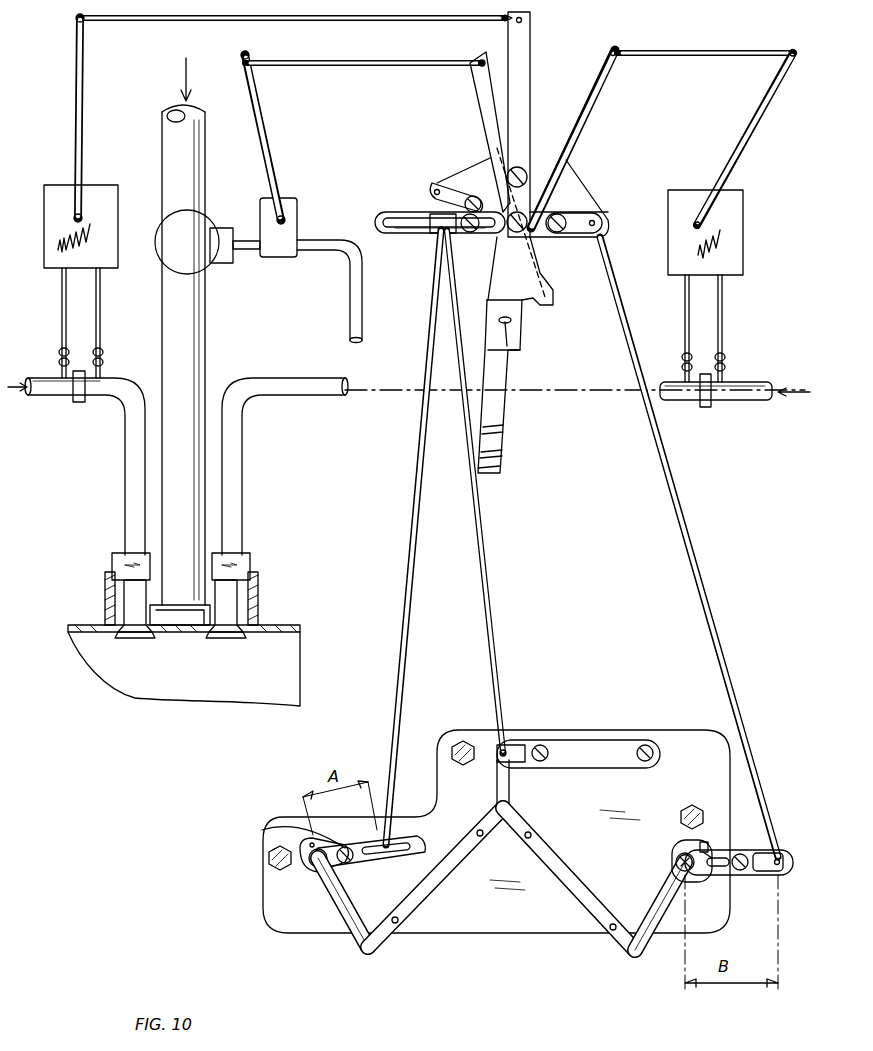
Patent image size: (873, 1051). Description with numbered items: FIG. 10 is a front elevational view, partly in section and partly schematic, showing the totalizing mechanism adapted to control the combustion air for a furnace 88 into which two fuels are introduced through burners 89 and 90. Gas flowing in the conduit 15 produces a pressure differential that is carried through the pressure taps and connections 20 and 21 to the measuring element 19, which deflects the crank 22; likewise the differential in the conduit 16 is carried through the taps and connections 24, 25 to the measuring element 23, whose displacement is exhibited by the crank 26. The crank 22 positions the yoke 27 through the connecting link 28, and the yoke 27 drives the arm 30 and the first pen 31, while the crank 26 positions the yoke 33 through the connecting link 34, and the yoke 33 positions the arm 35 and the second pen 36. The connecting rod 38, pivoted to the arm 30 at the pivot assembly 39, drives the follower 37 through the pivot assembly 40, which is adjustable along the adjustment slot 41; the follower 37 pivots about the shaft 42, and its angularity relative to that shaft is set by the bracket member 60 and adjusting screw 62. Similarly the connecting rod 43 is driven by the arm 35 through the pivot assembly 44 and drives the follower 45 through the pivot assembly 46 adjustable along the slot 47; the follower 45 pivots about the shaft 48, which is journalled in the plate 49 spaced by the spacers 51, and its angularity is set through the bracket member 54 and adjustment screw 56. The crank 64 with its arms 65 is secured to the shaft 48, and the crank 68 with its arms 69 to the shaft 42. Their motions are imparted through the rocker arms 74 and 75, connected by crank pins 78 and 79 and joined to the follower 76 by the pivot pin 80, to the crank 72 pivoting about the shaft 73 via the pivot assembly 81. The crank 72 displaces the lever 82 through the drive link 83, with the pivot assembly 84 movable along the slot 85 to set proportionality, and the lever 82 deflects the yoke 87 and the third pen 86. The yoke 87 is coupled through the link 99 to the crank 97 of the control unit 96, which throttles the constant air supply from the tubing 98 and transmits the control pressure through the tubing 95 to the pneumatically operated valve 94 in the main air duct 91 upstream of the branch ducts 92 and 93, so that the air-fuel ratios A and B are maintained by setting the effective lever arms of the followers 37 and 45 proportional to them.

The conduit 15 is at (126, 443).
The conduit 16 is at (285, 400).
The measuring element 19 is at (97, 190).
The pressure tap and connection 20 is at (60, 308).
The pressure tap and connection 21 is at (102, 308).
The crank 22 is at (82, 86).
The measuring element 23 is at (745, 231).
The pressure tap and connection 24 is at (683, 318).
The pressure tap and connection 25 is at (724, 318).
The crank 26 is at (742, 132).
The yoke 27 is at (532, 32).
The connecting link 28 is at (178, 22).
The arm 30 is at (478, 170).
The first pen 31 is at (498, 416).
The yoke 33 is at (598, 92).
The connecting link 34 is at (680, 52).
The arm 35 is at (580, 185).
The second pen 36 is at (493, 448).
The follower 37 is at (400, 845).
The connecting rod 38 is at (404, 523).
The pivot assembly 39 is at (432, 188).
The pivot assembly 40 is at (368, 858).
The adjustment slot 41 is at (412, 840).
The shaft 42 is at (310, 864).
The connecting rod 43 is at (672, 512).
The pivot assembly 44 is at (582, 235).
The follower 45 is at (728, 878).
The pivot assembly 46 is at (765, 878).
The adjustment slot 47 is at (760, 852).
The shaft 48 is at (674, 860).
The plate 49 is at (582, 732).
The spacer 51 is at (268, 862).
The bracket member 54 is at (703, 840).
The adjustment screw 56 is at (706, 850).
The bracket member 60 is at (262, 830).
The adjusting screw 62 is at (310, 838).
The crank 64 is at (658, 896).
The arm 65 is at (655, 915).
The crank 68 is at (345, 932).
The arm 69 is at (315, 900).
The crank 72 is at (575, 768).
The shaft 73 is at (654, 752).
The rocker arm 74 is at (418, 912).
The rocker arm 75 is at (590, 900).
The follower 76 is at (497, 782).
The crank pin 78 is at (375, 950).
The crank pin 79 is at (628, 952).
The pivot pin 80 is at (510, 806).
The pivot assembly 81 is at (515, 745).
The lever 82 is at (382, 212).
The drive link 83 is at (490, 614).
The pivot assembly 84 is at (450, 235).
The slot 85 is at (405, 232).
The third pen 86 is at (493, 470).
The yoke 87 is at (483, 95).
The furnace 88 is at (190, 685).
The burner 89 is at (120, 600).
The burner 90 is at (240, 603).
The main air duct 91 is at (205, 343).
The branch duct 92 is at (105, 575).
The branch duct 93 is at (258, 575).
The pneumatically operated valve 94 is at (200, 258).
The tubing 95 is at (250, 252).
The control unit 96 is at (297, 228).
The crank 97 is at (265, 125).
The tubing 98 is at (352, 305).
The link 99 is at (378, 68).